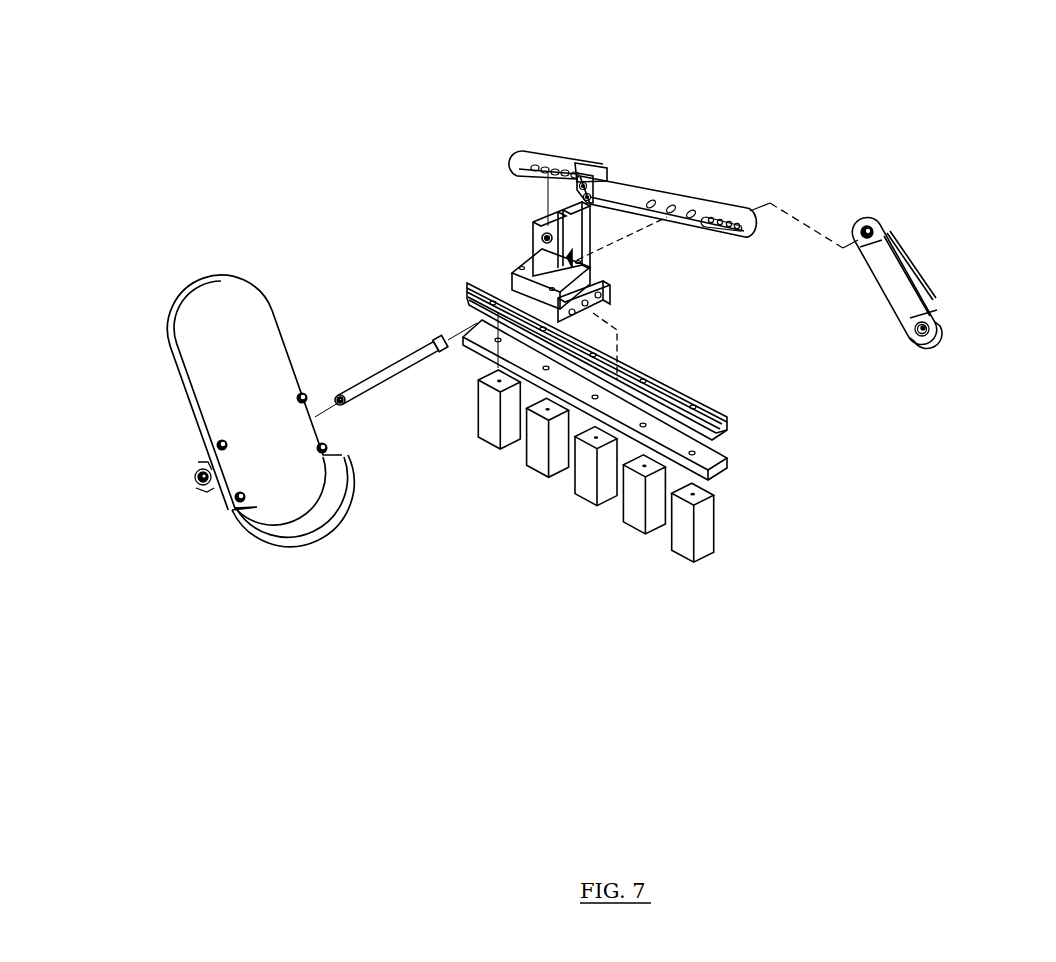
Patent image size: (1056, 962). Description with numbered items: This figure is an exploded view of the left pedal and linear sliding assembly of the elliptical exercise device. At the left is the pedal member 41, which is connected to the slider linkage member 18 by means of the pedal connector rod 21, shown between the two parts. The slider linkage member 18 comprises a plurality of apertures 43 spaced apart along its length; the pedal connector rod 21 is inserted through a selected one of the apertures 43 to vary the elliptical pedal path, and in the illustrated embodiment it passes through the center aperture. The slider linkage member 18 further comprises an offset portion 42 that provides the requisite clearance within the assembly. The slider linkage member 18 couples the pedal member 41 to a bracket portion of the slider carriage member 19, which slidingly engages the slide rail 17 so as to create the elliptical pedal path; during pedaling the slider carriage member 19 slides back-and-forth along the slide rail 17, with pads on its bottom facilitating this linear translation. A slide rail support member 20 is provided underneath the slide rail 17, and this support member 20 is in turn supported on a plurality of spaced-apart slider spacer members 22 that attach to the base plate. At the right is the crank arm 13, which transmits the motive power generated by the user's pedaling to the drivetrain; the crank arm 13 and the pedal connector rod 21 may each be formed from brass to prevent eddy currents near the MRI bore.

The crank arm 13 is at (903, 287).
The slide rail 17 is at (463, 278).
The slider linkage member 18 is at (522, 148).
The slider carriage member 19 is at (607, 293).
The slide rail support member 20 is at (728, 470).
The pedal connector rod 21 is at (400, 362).
The slider spacer members 22 is at (703, 523).
The pedal member 41 is at (222, 345).
The offset portion 42 is at (588, 170).
The apertures 43 is at (656, 200).